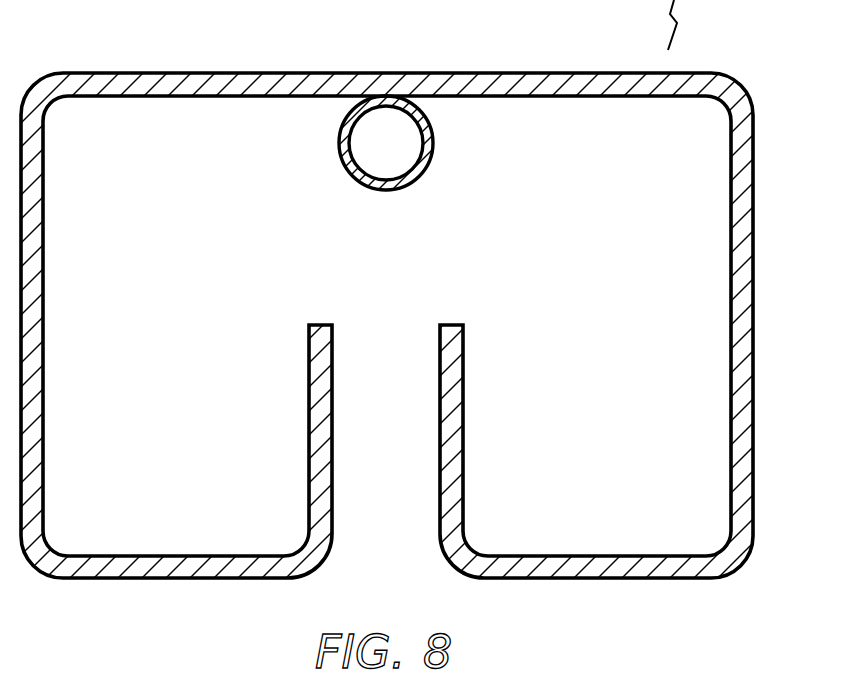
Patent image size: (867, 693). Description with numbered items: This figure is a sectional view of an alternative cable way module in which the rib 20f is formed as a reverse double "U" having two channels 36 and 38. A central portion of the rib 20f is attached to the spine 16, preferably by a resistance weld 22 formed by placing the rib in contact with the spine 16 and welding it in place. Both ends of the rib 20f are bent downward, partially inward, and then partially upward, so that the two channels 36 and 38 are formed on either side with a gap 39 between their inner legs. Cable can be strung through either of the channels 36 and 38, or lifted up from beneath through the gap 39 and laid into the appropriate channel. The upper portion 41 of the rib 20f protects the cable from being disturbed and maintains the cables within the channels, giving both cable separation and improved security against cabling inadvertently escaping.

The rib 20f is at (163, 72).
The upper portion 41 is at (282, 72).
The resistance weld 22 is at (430, 98).
The spine 16 is at (410, 184).
The channel 36 is at (175, 392).
The channel 38 is at (585, 390).
The gap 39 is at (388, 530).